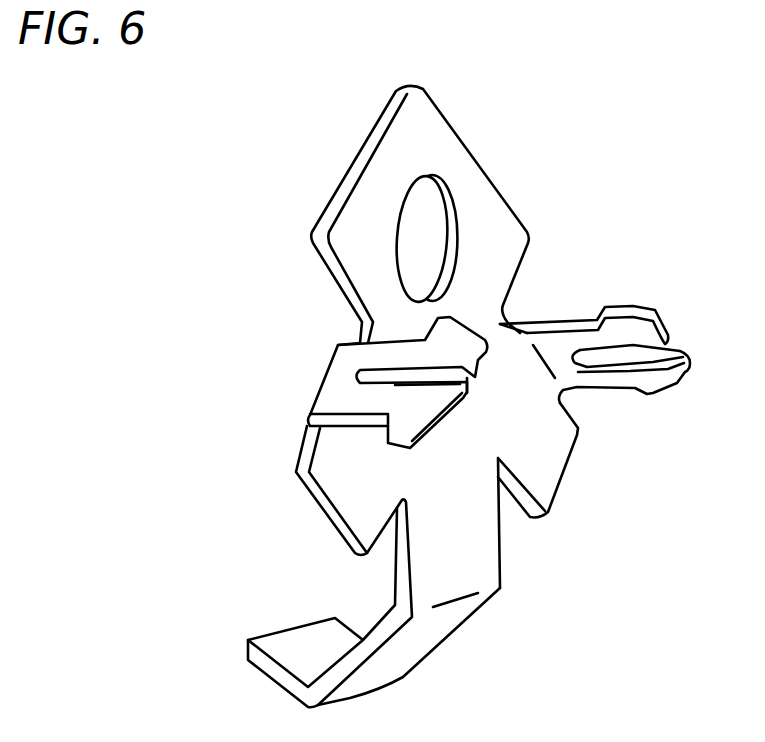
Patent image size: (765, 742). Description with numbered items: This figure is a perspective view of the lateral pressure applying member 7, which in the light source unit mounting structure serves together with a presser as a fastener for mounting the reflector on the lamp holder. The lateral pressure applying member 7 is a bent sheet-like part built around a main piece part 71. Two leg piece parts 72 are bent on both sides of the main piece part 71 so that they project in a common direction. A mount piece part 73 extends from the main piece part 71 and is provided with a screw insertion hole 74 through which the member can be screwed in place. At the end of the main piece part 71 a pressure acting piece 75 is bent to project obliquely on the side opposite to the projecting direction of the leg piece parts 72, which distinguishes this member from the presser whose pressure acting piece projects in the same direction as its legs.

The lateral pressure applying member 7 is at (522, 164).
The main piece part 71 is at (514, 323).
The leg piece parts 72 is at (577, 318).
The mount piece part 73 is at (388, 150).
The screw insertion hole 74 is at (395, 215).
The pressure acting piece 75 is at (417, 648).